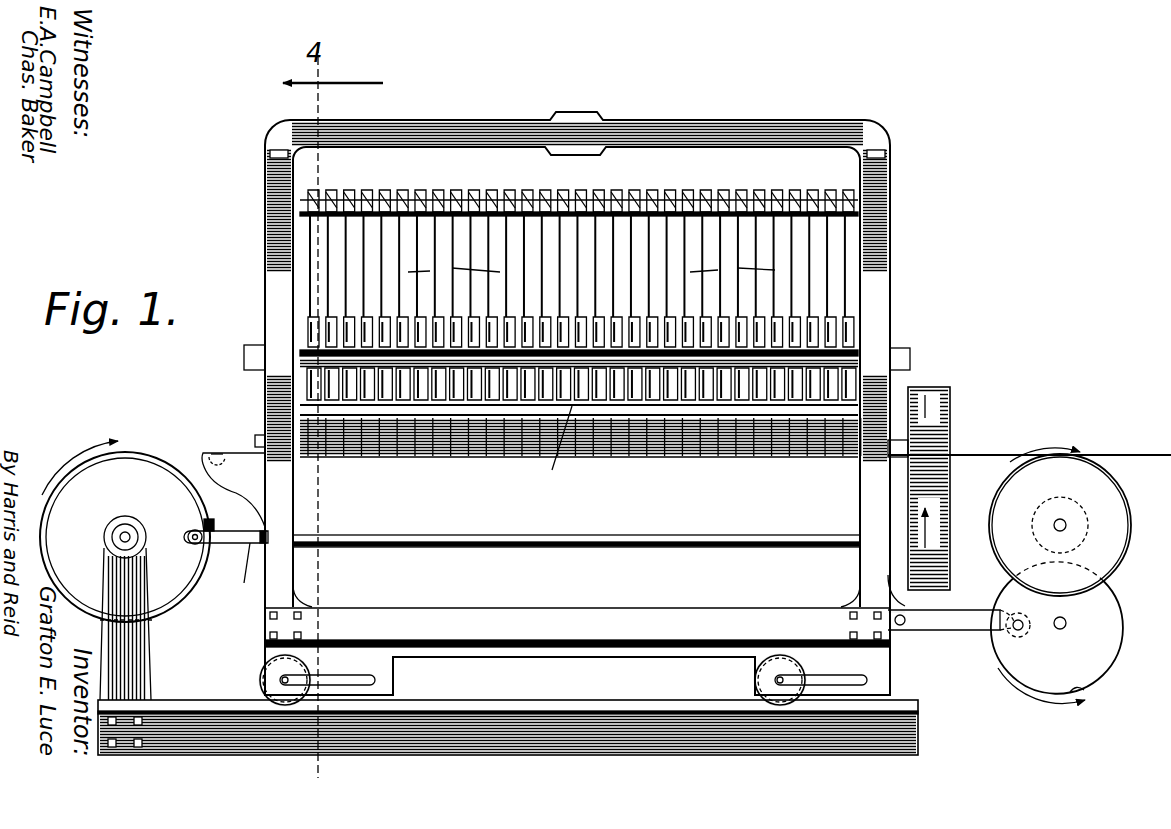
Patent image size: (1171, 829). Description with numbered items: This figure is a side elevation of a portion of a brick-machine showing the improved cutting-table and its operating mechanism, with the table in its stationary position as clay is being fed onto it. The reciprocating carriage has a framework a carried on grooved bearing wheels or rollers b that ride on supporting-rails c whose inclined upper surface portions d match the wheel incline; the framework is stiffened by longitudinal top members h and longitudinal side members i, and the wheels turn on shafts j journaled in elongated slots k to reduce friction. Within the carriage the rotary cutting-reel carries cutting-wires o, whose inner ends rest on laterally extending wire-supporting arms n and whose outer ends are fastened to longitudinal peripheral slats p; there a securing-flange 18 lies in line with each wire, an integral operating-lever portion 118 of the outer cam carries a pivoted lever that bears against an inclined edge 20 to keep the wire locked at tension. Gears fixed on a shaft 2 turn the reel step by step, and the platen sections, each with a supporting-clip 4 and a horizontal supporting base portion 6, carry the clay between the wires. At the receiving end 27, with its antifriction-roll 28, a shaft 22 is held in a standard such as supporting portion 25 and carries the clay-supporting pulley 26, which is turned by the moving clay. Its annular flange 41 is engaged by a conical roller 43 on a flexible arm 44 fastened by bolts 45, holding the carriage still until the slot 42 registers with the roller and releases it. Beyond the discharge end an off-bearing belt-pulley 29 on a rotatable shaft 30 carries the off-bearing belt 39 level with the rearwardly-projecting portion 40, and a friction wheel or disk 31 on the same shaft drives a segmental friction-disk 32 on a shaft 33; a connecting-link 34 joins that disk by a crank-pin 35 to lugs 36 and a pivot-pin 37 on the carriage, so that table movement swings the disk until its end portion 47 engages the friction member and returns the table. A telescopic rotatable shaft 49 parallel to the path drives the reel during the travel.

The shaft 2 is at (628, 531).
The supporting-clip 4 is at (360, 316).
The supporting base portion 6 is at (490, 456).
The securing-flange 18 is at (424, 189).
The operating-lever portion 118 is at (538, 189).
The inclined edge 20 is at (752, 189).
The shaft 22 is at (120, 542).
The supporting portion 25 is at (112, 533).
The clay-supporting pulley 26 is at (125, 531).
The receiving end 27 is at (233, 490).
The antifriction-roll 28 is at (215, 450).
The off-bearing belt-pulley 29 is at (1060, 522).
The rotatable shaft 30 is at (1054, 524).
The friction wheel or disk 31 is at (1084, 512).
The segmental friction-disk 32 is at (1057, 633).
The shaft 33 is at (1057, 629).
The connecting-link 34 is at (951, 621).
The crank-pin 35 is at (1013, 620).
The lugs 36 is at (900, 632).
The pivot-pin 37 is at (910, 632).
The off-bearing belt 39 is at (1126, 455).
The rearwardly-projecting portion 40 is at (994, 455).
The annular flange 41 is at (186, 600).
The slot 42 is at (212, 522).
The conical roller 43 is at (190, 531).
The flexible arm 44 is at (234, 544).
The bolts 45 is at (250, 547).
The end portion 47 is at (1090, 704).
The telescopic rotatable shaft 49 is at (888, 454).
The framework a is at (264, 300).
The bearing wheels or rollers b is at (282, 704).
The supporting-rails c is at (516, 756).
The inclined upper surface portions d is at (524, 702).
The longitudinal top members h is at (446, 124).
The longitudinal side members i is at (554, 614).
The shafts j is at (262, 680).
The elongated slots k is at (378, 681).
The wire-supporting arms n is at (418, 362).
The cutting-wires o is at (591, 271).
The peripheral slats p is at (602, 192).